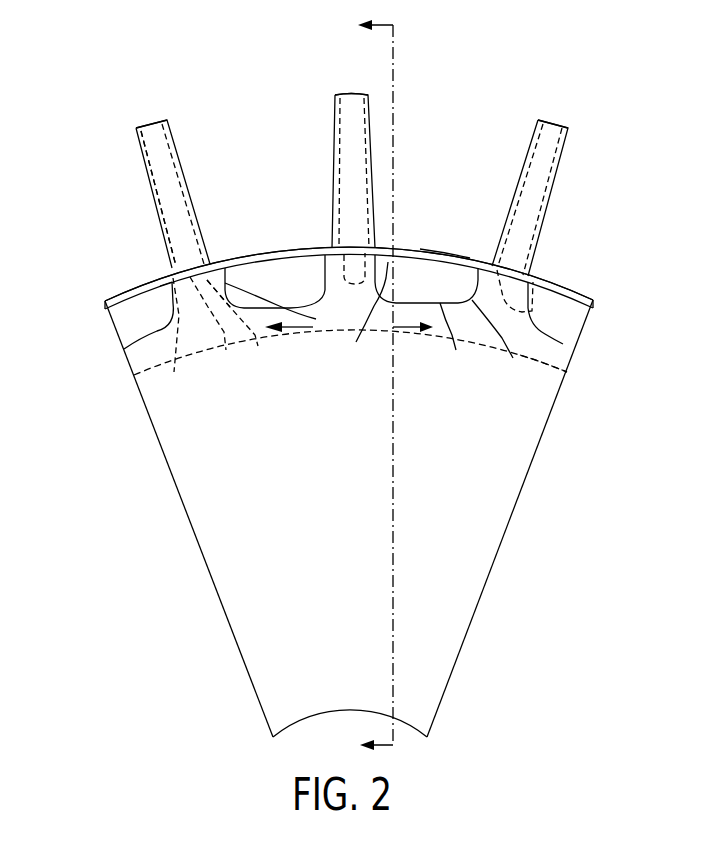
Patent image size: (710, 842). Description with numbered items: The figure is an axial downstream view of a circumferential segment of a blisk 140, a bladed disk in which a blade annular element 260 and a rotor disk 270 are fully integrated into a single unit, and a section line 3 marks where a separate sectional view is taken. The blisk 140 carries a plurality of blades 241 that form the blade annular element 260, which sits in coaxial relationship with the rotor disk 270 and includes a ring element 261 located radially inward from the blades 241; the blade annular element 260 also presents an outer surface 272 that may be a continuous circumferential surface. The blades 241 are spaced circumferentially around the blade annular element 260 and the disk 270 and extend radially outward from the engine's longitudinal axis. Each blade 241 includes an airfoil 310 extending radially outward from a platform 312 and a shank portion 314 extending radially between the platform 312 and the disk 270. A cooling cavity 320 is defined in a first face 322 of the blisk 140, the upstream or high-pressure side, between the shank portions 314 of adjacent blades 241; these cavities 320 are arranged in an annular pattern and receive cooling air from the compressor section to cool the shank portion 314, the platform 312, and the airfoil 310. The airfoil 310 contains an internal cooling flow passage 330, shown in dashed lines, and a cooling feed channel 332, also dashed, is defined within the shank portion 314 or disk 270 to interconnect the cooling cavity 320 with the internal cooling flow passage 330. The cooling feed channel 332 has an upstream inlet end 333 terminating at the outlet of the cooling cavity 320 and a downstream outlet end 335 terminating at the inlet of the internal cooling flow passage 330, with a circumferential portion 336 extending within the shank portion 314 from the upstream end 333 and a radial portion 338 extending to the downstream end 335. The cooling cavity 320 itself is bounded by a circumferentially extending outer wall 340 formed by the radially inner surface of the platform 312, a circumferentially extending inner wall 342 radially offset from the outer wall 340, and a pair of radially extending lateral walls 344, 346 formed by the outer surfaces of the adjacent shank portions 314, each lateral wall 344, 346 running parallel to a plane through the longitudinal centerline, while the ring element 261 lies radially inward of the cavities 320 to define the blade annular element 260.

The section line 3 is at (368, 386).
The blisk 140 is at (452, 94).
The blades 241 is at (152, 127).
The blade annular element 260 is at (128, 361).
The ring element 261 is at (552, 365).
The rotor disk 270 is at (489, 576).
The outer surface 272 is at (170, 304).
The airfoil 310 is at (160, 180).
The platform 312 is at (441, 250).
The shank portion 314 is at (172, 312).
The cooling cavity 320 is at (124, 304).
The first face 322 is at (258, 531).
The internal cooling flow passage 330 is at (182, 161).
The cooling feed channel 332 is at (215, 329).
The upstream inlet end 333 is at (286, 308).
The downstream outlet end 335 is at (201, 262).
The circumferential portion 336 is at (239, 330).
The radial portion 338 is at (177, 336).
The outer wall 340 is at (401, 258).
The inner wall 342 is at (455, 343).
The first lateral wall 344 is at (386, 316).
The second lateral wall 346 is at (499, 347).